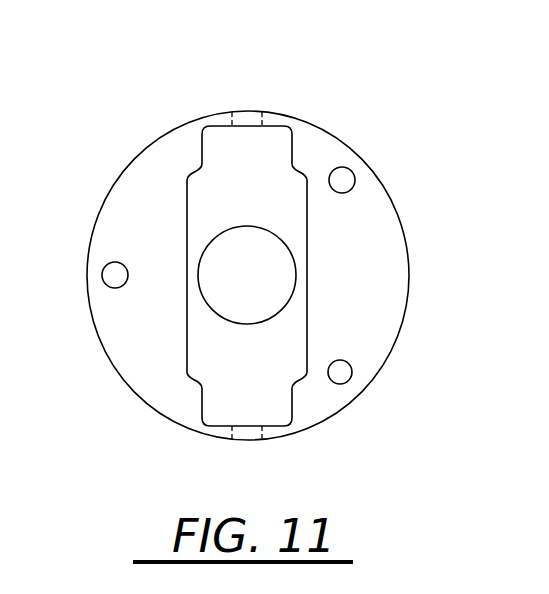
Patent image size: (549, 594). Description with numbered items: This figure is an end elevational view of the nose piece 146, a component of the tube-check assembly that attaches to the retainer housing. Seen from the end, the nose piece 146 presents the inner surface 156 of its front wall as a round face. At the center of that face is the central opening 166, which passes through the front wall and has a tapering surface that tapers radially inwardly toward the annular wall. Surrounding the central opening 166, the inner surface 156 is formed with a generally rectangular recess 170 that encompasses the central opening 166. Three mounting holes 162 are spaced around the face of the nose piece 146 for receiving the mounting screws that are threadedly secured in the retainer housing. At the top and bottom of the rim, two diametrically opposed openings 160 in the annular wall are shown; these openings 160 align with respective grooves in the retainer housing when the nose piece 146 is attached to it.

The nose piece 146 is at (334, 124).
The inner surface 156 is at (372, 212).
The openings 160 is at (236, 118).
The mounting holes 162 is at (350, 170).
The central opening 166 is at (295, 290).
The rectangular recess 170 is at (200, 207).